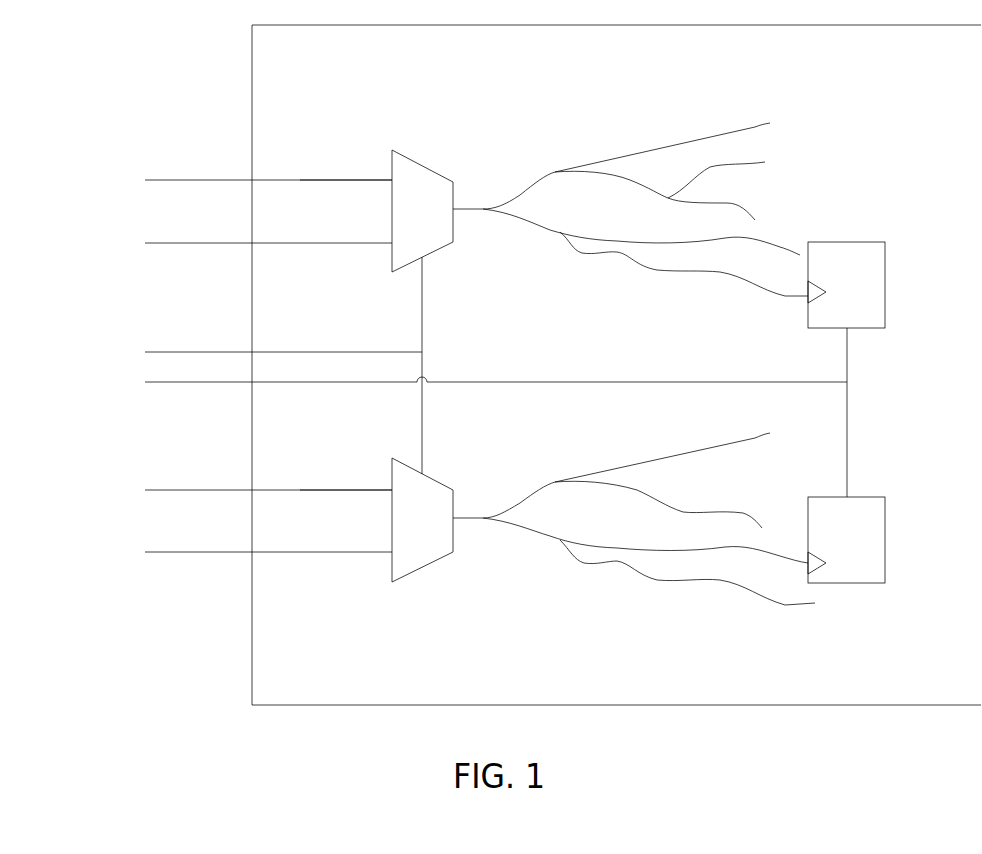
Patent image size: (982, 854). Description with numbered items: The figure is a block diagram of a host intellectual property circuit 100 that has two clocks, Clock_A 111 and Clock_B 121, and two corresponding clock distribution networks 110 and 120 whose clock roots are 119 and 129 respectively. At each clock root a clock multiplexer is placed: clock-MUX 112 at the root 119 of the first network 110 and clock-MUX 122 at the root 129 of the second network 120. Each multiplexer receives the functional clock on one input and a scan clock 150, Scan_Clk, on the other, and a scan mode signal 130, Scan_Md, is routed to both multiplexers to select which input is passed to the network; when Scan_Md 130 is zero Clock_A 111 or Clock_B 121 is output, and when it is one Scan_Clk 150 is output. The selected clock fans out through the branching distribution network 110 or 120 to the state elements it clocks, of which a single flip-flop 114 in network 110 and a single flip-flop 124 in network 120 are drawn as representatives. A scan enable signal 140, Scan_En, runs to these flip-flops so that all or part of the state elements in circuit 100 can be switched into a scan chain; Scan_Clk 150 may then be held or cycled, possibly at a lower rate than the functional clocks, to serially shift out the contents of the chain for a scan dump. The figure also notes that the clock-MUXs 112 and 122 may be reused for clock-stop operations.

The host IP circuit 100 is at (616, 365).
The clock distribution network 110 is at (704, 126).
The Clock_A 111 is at (240, 174).
The clock multiplexer 112 is at (513, 307).
The flip-flop 114 is at (846, 369).
The clock root 119 is at (325, 180).
The clock distribution network 120 is at (591, 570).
The Clock_B 121 is at (237, 481).
The clock multiplexer 122 is at (515, 360).
The flip-flop 124 is at (846, 540).
The clock root 129 is at (325, 490).
The scan mode signal 130 is at (244, 365).
The scan enable signal 140 is at (455, 391).
The scan clock 150 is at (234, 391).